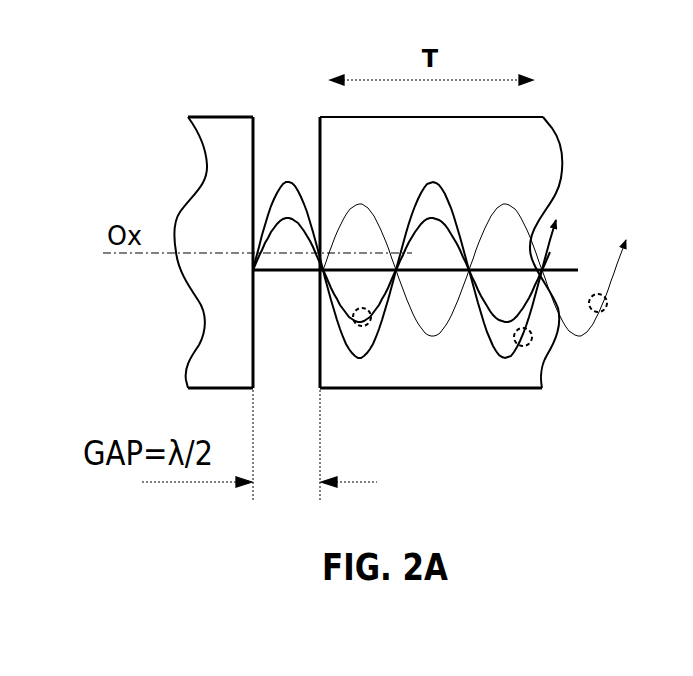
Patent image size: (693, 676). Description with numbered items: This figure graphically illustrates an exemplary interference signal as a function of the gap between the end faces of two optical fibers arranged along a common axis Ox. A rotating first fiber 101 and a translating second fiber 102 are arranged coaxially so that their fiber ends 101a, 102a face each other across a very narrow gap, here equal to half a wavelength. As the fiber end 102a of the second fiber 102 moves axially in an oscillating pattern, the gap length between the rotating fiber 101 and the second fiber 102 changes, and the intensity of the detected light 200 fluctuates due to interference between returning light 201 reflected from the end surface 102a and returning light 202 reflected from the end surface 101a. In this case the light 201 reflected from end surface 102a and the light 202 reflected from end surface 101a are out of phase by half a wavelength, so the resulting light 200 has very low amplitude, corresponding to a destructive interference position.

The first fiber 101 is at (178, 198).
The fiber end of the first fiber 101a is at (253, 302).
The second fiber 102 is at (441, 292).
The fiber end of the second fiber 102a is at (320, 348).
The detected light 200 is at (366, 325).
The returning light reflected from end surface 102a 201 is at (606, 311).
The returning light reflected from end surface 101a 202 is at (531, 344).